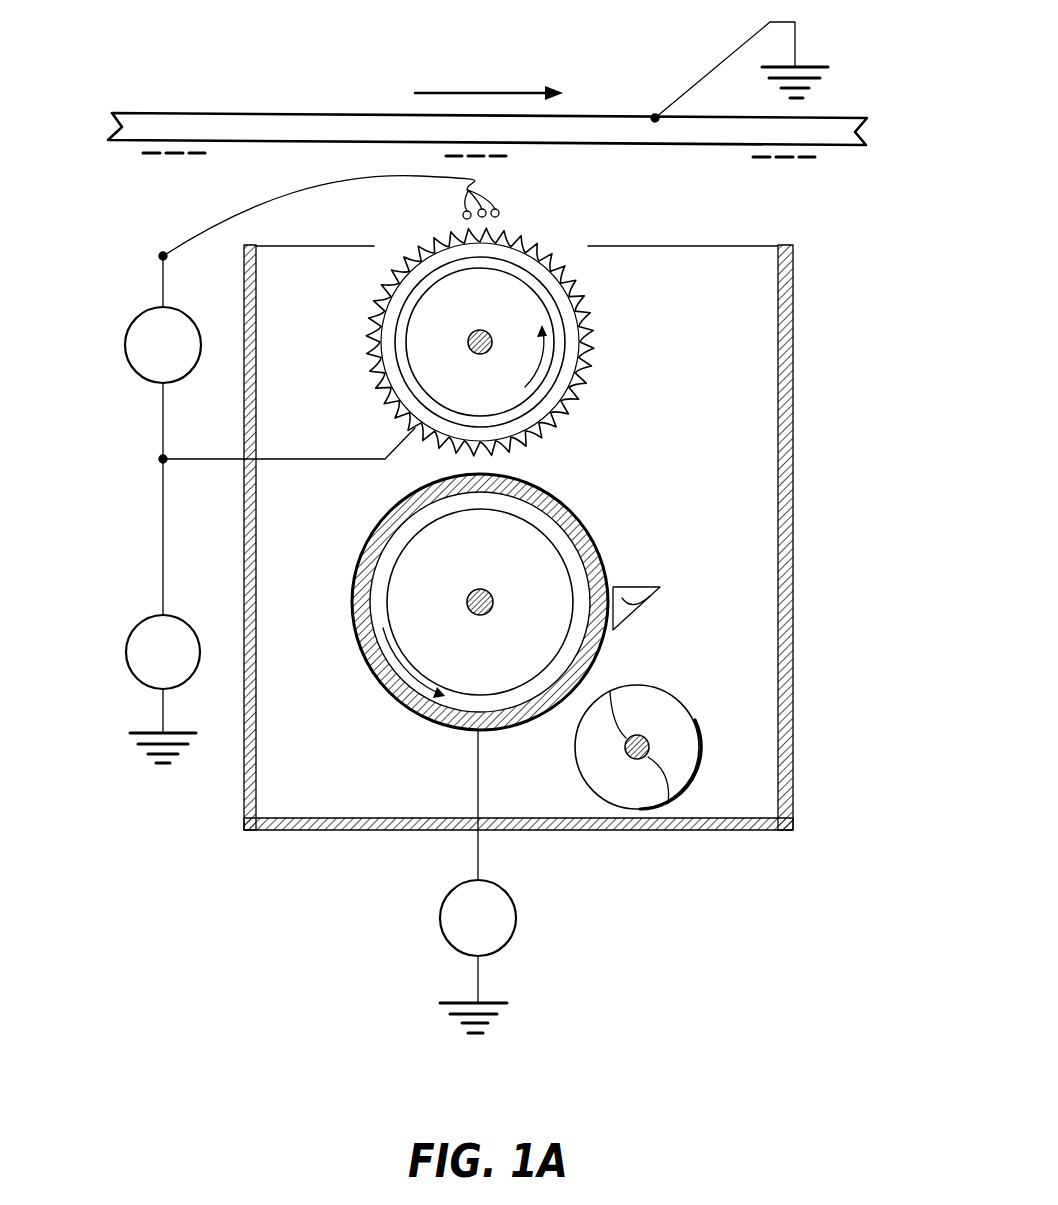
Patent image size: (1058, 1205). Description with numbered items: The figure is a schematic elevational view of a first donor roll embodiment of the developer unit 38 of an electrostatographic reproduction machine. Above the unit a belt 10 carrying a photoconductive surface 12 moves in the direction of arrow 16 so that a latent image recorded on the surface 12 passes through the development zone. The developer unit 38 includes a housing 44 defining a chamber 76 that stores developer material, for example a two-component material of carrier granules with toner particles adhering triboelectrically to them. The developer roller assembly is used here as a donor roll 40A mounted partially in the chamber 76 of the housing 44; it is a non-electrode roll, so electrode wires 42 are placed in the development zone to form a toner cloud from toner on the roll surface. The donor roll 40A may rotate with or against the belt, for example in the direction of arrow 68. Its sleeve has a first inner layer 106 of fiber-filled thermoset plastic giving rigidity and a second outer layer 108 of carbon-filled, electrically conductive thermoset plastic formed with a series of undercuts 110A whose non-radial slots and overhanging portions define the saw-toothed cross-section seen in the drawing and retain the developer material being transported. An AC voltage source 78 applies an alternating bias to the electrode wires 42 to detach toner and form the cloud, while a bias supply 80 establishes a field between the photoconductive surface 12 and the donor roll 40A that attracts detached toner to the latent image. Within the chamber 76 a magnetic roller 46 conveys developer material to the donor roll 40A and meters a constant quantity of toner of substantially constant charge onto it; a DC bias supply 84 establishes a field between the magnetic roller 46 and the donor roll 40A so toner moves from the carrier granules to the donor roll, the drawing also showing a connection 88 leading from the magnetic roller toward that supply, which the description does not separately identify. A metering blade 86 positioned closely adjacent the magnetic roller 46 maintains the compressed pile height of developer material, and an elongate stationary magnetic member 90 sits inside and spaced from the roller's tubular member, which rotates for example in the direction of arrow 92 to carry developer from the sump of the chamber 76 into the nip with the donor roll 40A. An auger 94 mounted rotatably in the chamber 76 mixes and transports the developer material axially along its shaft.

The belt 10 is at (612, 99).
The photoconductive surface 12 is at (679, 147).
The arrow 16 is at (500, 88).
The developer unit 38 is at (817, 803).
The donor roll 40A is at (588, 402).
The electrode wires 42 is at (505, 211).
The housing 44 is at (793, 370).
The magnetic roller 46 is at (648, 543).
The arrow 68 is at (541, 364).
The chamber 76 is at (757, 606).
The AC voltage source 78 is at (130, 356).
The bias supply 80 is at (130, 655).
The DC bias supply 84 is at (502, 920).
The metering blade 86 is at (627, 601).
The electrical connection 88 is at (515, 735).
The magnetic member 90 is at (553, 568).
The arrow 92 is at (408, 675).
The auger 94 is at (620, 790).
The first inner layer 106 is at (410, 300).
The second outer layer 108 is at (380, 380).
The undercut 110A is at (390, 296).